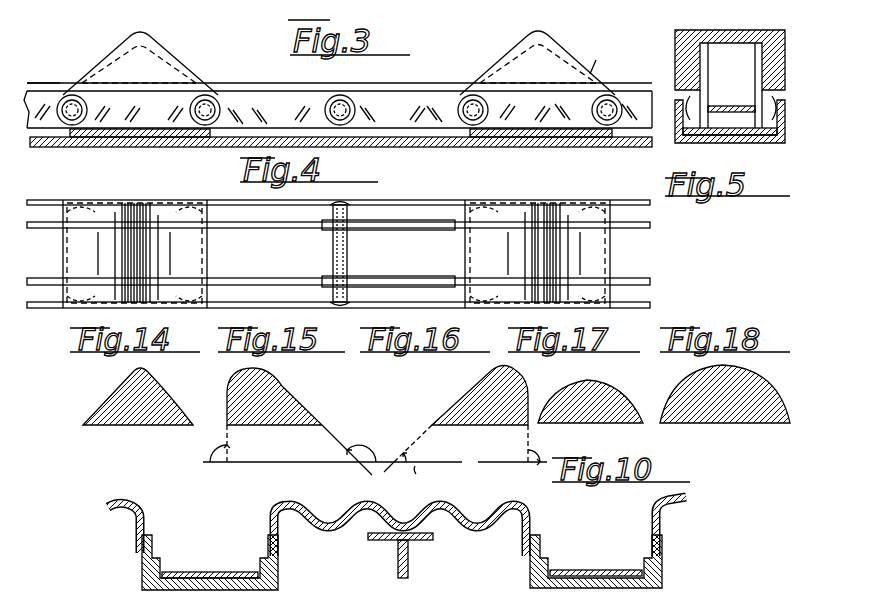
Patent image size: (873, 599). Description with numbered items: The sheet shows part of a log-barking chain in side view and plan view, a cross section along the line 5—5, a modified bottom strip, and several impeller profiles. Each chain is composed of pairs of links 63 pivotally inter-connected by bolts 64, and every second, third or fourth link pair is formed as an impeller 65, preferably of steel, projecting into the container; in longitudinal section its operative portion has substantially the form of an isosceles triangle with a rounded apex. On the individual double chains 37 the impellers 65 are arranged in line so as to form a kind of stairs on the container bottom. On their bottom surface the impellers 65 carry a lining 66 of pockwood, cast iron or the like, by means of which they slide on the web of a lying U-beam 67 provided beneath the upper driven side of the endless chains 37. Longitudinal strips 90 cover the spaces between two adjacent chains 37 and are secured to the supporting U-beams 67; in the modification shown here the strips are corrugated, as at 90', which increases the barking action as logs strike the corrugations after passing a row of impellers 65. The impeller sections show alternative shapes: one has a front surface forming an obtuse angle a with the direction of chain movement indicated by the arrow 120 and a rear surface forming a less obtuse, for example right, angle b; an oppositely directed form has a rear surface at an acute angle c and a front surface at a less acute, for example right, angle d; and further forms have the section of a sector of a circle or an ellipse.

In FIG. 3, the double chain 37 is at (40, 100).
In FIG. 4, the double chain 37 is at (45, 226).
In FIG. 3, the link 63 is at (438, 100).
In FIG. 3, the bolt 64 is at (209, 106).
In FIG. 5, the bolt 64 is at (728, 106).
In FIG. 3, the impeller 65 is at (590, 74).
In FIG. 5, the impeller 65 is at (770, 36).
In FIG. 4, the impeller 65 is at (150, 210).
In FIG. 3, the lining 66 is at (503, 138).
In FIG. 5, the lining 66 is at (725, 140).
In FIG. 3, the U-beam 67 is at (565, 147).
In FIG. 5, the U-beam 67 is at (780, 143).
In FIG. 3, the longitudinal strip 90 is at (338, 91).
In FIG. 10, the corrugated strip 90' is at (397, 528).
In FIG. 4, the section line 5- 5 is at (540, 316).
In FIG. 15, the obtuse angle a is at (350, 450).
In FIG. 15, the angle b is at (212, 452).
In FIG. 16, the acute angle c is at (402, 468).
In FIG. 16, the angle d is at (537, 449).
In FIG. 16, the arrow 120 is at (429, 474).